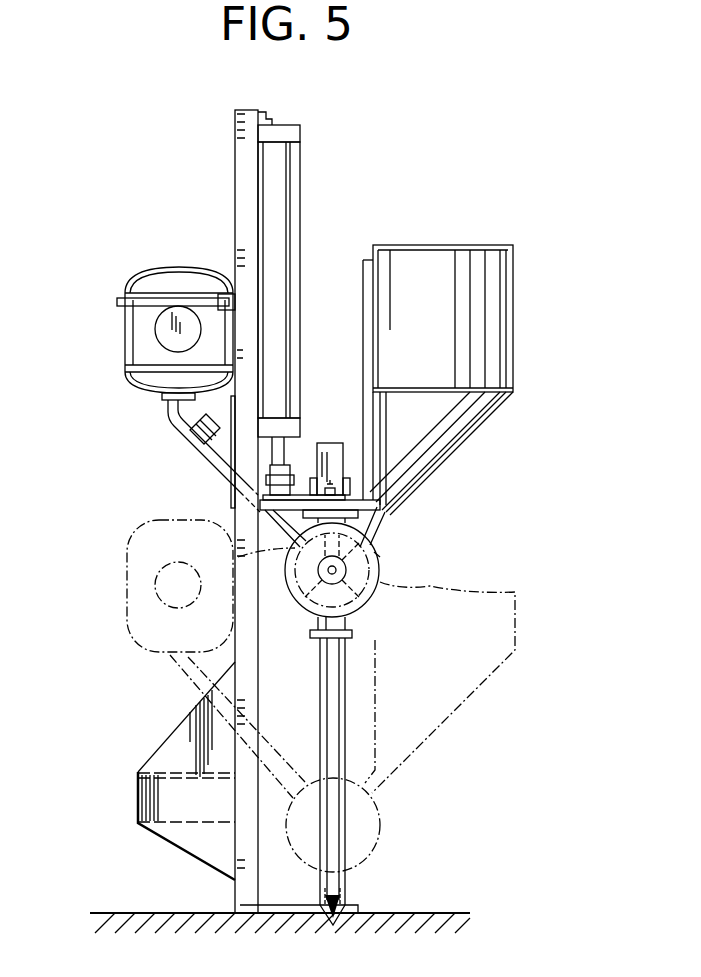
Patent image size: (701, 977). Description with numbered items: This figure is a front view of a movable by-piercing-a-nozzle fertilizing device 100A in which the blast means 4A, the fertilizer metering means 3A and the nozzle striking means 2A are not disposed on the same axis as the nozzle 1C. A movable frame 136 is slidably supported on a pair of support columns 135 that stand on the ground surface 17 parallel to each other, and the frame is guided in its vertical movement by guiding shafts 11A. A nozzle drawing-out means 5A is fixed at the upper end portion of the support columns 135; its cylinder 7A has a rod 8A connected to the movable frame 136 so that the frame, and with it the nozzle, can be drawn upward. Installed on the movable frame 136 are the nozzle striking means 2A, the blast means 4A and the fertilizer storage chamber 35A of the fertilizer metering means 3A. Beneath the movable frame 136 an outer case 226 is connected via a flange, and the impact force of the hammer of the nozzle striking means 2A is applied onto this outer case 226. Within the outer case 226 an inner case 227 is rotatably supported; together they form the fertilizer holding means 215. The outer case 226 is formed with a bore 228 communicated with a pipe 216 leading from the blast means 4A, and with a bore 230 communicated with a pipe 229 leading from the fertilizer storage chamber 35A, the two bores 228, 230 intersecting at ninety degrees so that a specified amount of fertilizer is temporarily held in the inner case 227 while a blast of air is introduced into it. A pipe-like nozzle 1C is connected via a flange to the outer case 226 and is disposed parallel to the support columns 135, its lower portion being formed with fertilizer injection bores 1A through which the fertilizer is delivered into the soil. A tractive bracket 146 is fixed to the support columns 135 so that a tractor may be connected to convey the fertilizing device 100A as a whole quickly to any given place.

The support columns 135 is at (235, 183).
The cylinder 7A is at (283, 183).
The nozzle drawing-out means 5A is at (300, 241).
The rod 8A is at (283, 463).
The nozzle striking means 2A is at (336, 436).
The guiding shafts 11A is at (340, 488).
The fertilizer metering means 3A is at (401, 517).
The fertilizer storage chamber 35A is at (508, 349).
The blast means 4A is at (118, 342).
The pipe 216 is at (220, 462).
The movable frame 136 is at (231, 502).
The bore 228 is at (250, 565).
The inner case 227 is at (375, 607).
The bore 230 is at (380, 560).
The pipe 229 is at (392, 528).
The outer case 226 is at (300, 600).
The fertilizer holding means 215 is at (360, 622).
The nozzle 1C is at (322, 697).
The fertilizer injection bores 1A is at (345, 900).
The tractive bracket 146 is at (188, 840).
The ground surface 17 is at (440, 913).
The by-piercing-a-nozzle fertilizing device 100A is at (593, 484).